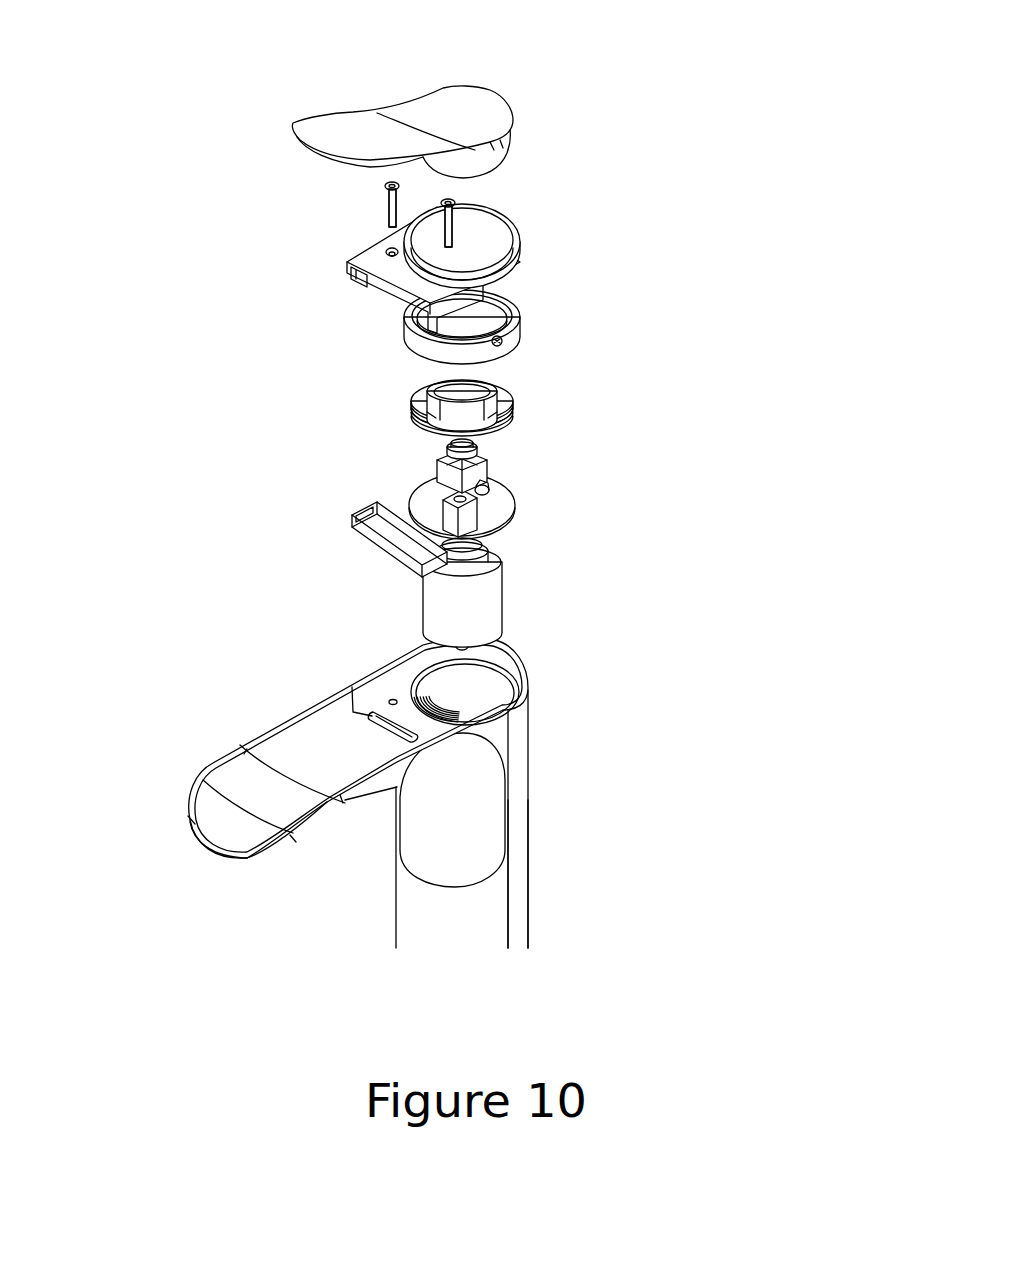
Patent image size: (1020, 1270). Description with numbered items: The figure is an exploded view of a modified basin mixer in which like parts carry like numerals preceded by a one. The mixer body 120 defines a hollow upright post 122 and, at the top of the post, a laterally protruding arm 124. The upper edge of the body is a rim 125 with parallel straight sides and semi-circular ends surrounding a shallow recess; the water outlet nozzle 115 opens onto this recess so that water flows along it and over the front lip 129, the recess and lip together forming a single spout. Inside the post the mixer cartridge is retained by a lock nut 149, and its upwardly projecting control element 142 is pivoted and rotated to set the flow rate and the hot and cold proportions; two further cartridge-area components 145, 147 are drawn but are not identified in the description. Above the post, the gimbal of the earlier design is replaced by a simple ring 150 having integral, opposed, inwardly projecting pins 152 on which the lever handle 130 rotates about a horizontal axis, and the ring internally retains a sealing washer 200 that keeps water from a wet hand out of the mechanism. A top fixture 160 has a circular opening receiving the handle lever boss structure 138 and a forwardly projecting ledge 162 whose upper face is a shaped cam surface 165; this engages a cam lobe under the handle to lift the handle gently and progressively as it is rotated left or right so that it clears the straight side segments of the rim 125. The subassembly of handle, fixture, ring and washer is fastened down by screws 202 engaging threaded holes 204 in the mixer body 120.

The water outlet nozzle 115 is at (442, 578).
The mixer body 120 is at (530, 843).
The hollow upright post 122 is at (530, 920).
The laterally protruding arm 124 is at (290, 845).
The rim 125 is at (265, 727).
The front lip 129 is at (189, 855).
The lever handle 130 is at (521, 112).
The handle lever boss structure 138 is at (482, 171).
The control element 142 is at (492, 542).
The valve cartridge 145 is at (436, 469).
The valve stem 147 is at (498, 478).
The lock nut 149 is at (519, 412).
The ring 150 is at (525, 317).
The pins 152 is at (487, 343).
The top fixture 160 is at (527, 241).
The ledge 162 is at (374, 283).
The cam surface 165 is at (374, 261).
The sealing washer 200 is at (520, 505).
The screws 202 is at (412, 182).
The threaded holes 204 is at (388, 697).